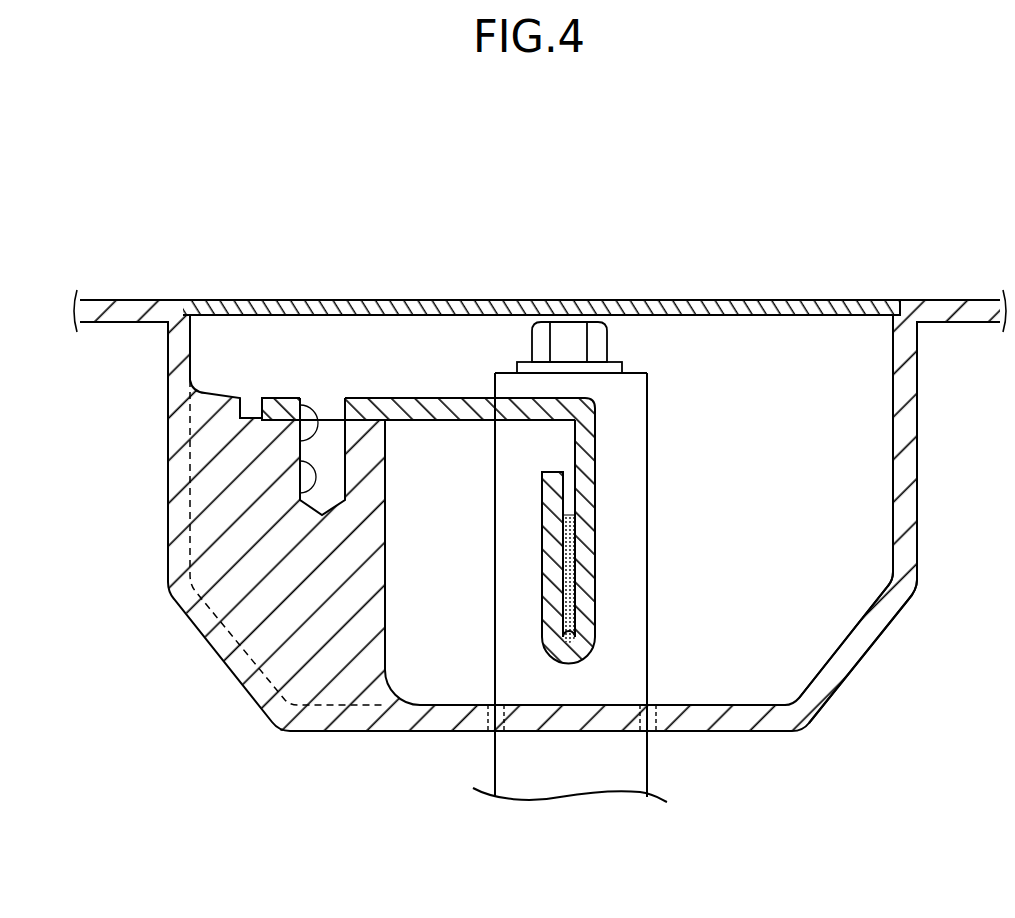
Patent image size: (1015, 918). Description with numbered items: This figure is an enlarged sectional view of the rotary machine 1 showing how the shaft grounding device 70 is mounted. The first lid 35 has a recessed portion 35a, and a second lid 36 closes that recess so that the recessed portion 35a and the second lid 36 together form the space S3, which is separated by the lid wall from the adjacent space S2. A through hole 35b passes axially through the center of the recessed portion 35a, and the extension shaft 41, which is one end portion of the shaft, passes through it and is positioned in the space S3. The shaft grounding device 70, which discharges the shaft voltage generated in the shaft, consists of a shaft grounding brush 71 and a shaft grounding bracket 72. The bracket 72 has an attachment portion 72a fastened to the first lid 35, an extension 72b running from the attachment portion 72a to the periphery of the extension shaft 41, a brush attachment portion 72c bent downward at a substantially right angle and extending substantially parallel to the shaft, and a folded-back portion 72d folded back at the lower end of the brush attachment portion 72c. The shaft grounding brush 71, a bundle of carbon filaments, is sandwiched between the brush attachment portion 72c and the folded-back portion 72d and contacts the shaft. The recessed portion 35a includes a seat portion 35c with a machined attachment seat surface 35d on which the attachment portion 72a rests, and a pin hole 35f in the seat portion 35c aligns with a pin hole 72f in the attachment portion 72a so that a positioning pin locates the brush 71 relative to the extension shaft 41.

The rotary machine 1 is at (841, 157).
The first lid 35 is at (982, 300).
The recessed portion 35a is at (893, 397).
The through hole 35b is at (508, 740).
The seat portion 35c is at (277, 627).
The attachment seat surface 35d is at (190, 390).
The pin hole 35f is at (300, 490).
The second lid 36 is at (842, 300).
The extension shaft 41 is at (620, 765).
The shaft grounding device 70 is at (612, 575).
The shaft grounding brush 71 is at (573, 593).
The shaft grounding bracket 72 is at (685, 229).
The attachment portion 72a is at (288, 398).
The extension 72b is at (452, 398).
The brush attachment portion 72c is at (597, 520).
The folded-back portion 72d is at (542, 527).
The pin hole 72f is at (300, 442).
The space S3 is at (834, 474).
The space S2 is at (983, 474).